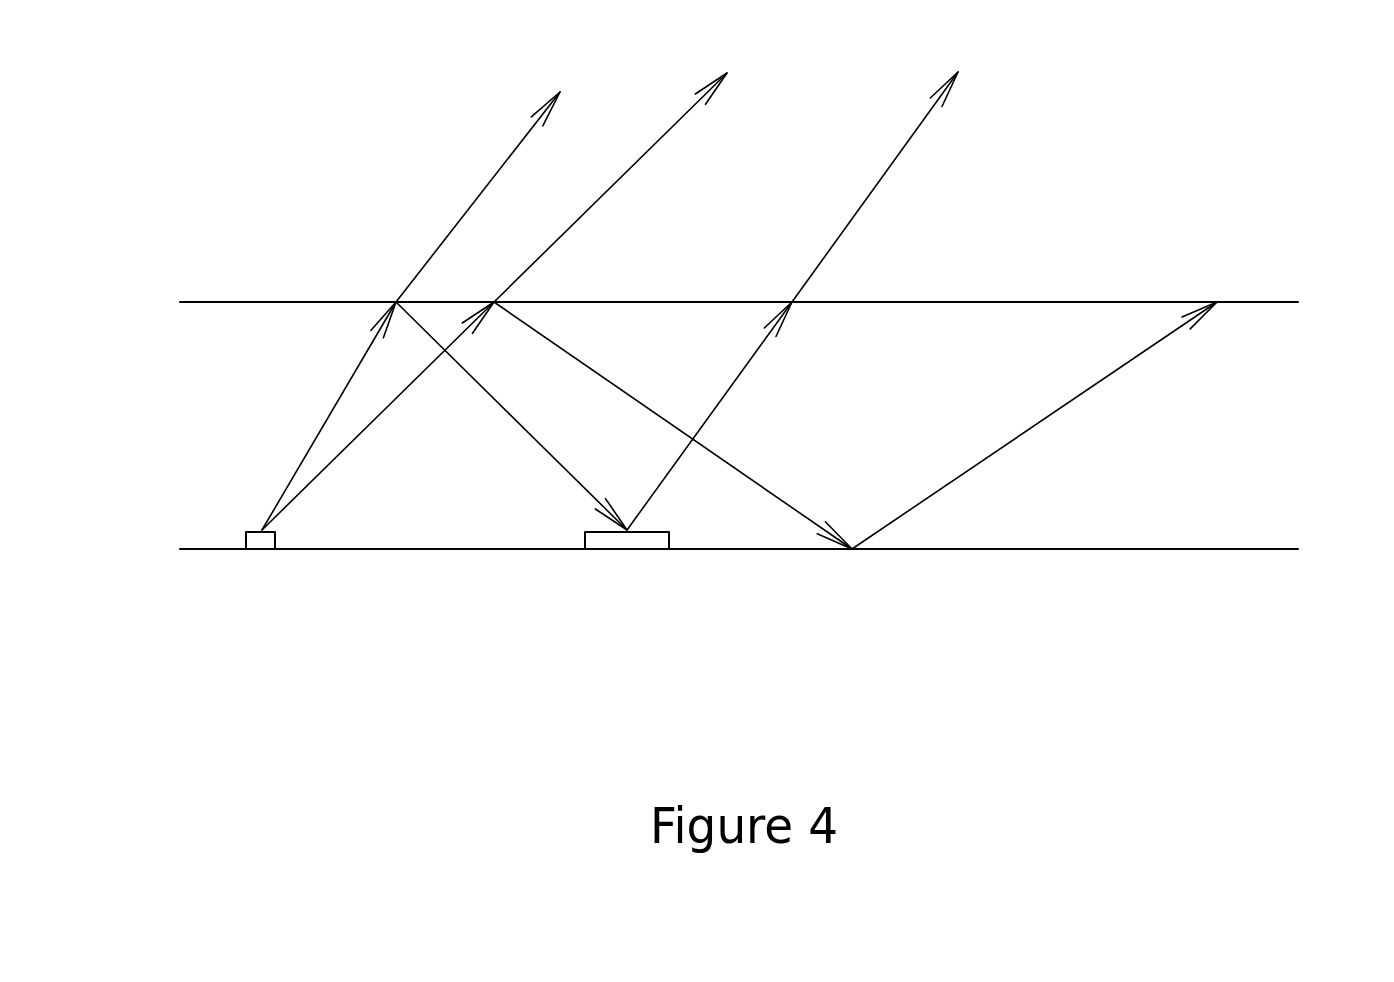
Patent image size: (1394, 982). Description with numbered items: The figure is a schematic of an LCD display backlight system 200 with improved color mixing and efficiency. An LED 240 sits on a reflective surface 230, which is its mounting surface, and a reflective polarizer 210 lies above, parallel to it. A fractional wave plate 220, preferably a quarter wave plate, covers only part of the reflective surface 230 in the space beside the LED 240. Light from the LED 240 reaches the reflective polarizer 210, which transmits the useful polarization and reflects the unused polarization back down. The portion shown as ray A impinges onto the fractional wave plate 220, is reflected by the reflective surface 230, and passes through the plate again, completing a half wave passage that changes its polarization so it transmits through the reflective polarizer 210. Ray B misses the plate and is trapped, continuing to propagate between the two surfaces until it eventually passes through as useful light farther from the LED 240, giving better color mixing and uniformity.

The LCD display backlight system 200 is at (728, 422).
The reflective polarizer 210 is at (965, 302).
The fractional wave plate 220 is at (623, 547).
The reflective surface 230 is at (1009, 549).
The LED 240 is at (266, 541).